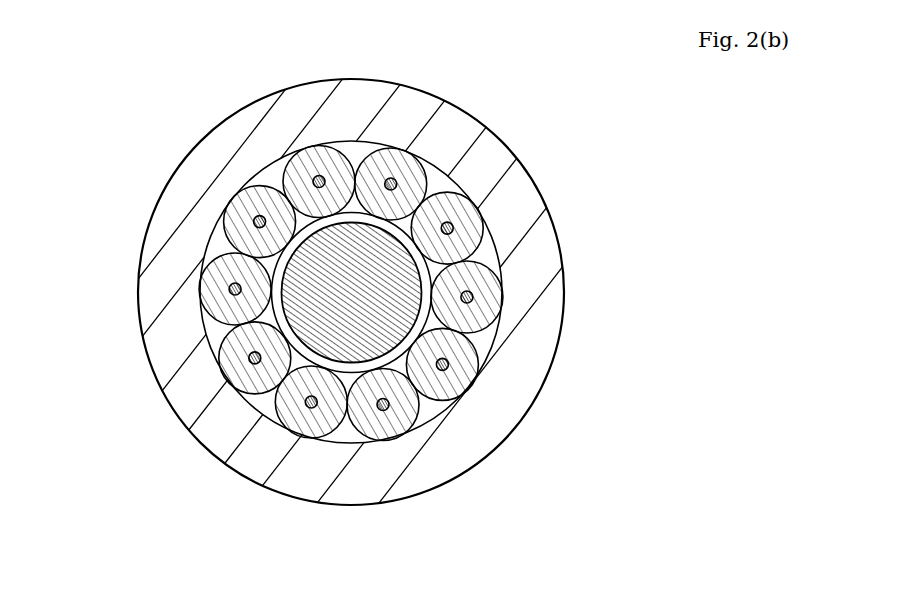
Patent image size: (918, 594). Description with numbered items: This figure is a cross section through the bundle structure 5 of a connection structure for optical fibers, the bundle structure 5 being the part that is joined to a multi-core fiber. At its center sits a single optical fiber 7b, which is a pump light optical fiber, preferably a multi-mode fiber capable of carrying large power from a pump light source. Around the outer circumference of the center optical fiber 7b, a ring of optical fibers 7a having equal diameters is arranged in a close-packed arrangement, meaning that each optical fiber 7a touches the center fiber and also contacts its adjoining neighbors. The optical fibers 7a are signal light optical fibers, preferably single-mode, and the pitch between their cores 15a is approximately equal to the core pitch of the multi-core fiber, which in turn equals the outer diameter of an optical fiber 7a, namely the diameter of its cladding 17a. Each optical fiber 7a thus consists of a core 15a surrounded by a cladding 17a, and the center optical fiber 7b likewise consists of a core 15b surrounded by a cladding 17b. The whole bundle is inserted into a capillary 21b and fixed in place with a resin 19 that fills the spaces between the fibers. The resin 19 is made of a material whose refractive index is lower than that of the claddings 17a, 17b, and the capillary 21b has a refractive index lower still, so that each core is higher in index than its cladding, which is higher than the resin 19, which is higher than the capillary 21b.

The bundle structure 5 is at (218, 243).
The optical fiber 7a is at (227, 363).
The center optical fiber 7b is at (493, 237).
The core 15a is at (450, 230).
The core 15b is at (443, 363).
The cladding 17a is at (470, 248).
The cladding 17b is at (460, 395).
The resin 19 is at (276, 175).
The capillary 21b is at (518, 195).